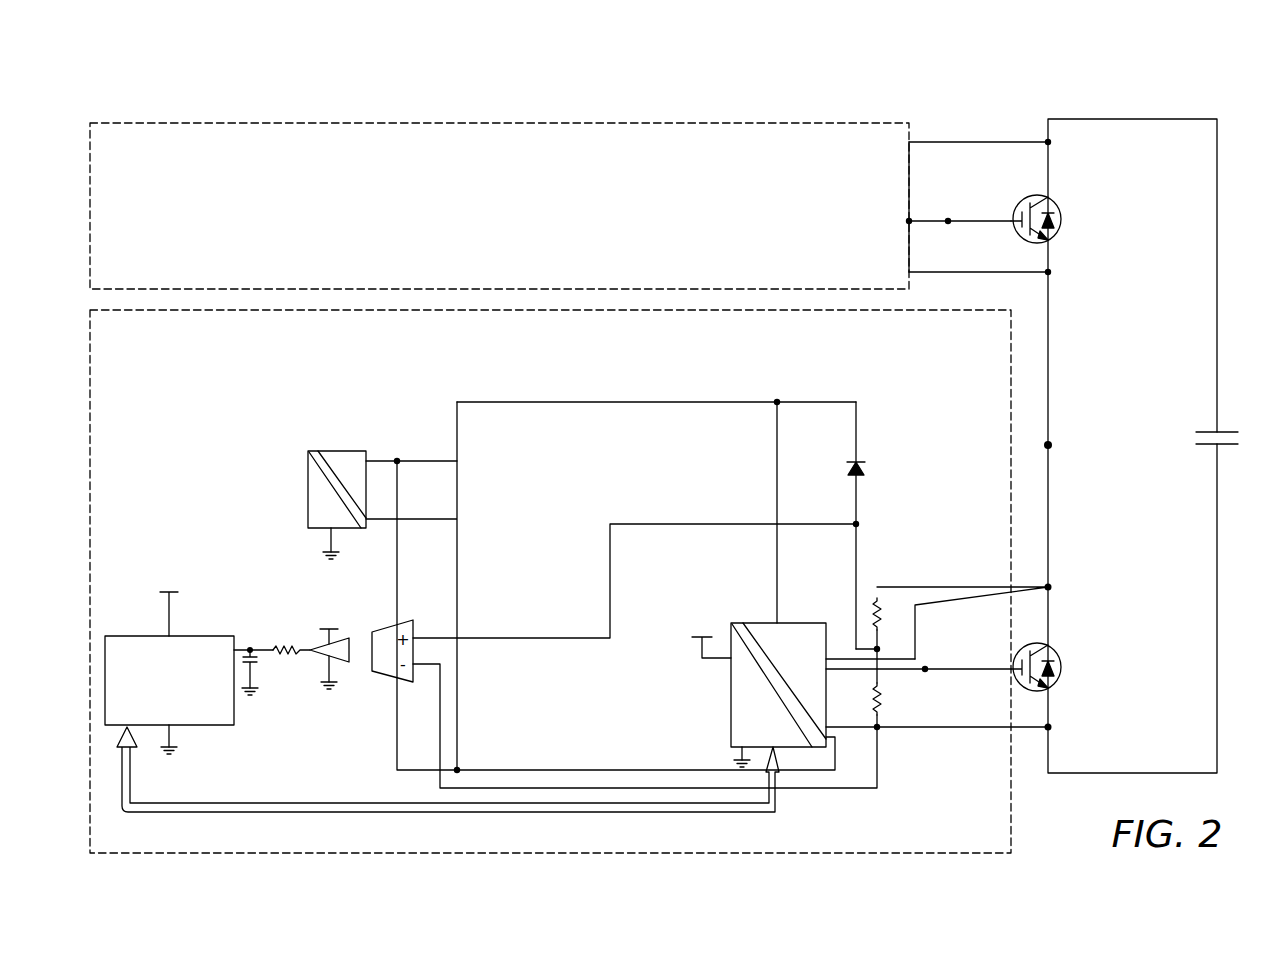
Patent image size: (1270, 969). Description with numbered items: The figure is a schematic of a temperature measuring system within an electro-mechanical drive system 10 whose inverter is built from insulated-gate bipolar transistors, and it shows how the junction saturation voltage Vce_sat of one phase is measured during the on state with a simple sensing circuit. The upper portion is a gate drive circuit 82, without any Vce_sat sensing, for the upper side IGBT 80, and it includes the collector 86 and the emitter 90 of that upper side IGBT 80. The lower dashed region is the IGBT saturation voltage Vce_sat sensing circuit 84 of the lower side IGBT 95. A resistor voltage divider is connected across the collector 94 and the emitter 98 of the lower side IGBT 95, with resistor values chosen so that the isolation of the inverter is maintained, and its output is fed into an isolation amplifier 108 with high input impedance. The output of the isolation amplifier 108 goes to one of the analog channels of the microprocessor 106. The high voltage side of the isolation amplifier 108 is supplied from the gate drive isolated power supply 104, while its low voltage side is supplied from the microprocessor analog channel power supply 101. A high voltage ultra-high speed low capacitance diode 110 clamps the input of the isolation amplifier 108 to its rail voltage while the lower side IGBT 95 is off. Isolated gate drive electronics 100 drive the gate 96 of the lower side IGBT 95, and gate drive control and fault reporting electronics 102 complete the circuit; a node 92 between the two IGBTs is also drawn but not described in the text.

The electro-mechanical drive system 10 is at (838, 100).
The upper side IGBT 80 is at (1188, 104).
The gate drive circuit of upper side IGBT 82 is at (893, 145).
The IGBT saturation voltage Vce_sat sensing circuit 84 is at (990, 833).
The collector 86 is at (1048, 142).
The emitter 90 is at (1048, 272).
The midpoint node 92 is at (1050, 443).
The collector 94 is at (1050, 586).
The lower side IGBT 95 is at (1054, 652).
The gate 96 is at (926, 668).
The emitter 98 is at (1050, 729).
The isolated gate drive electronics 100 is at (797, 645).
The microprocessor analog channel power supply 101 is at (738, 612).
The gate drive control and fault reporting electronics 102 is at (787, 737).
The gate drive isolated power supply 104 is at (355, 465).
The microprocessor 106 is at (198, 708).
The isolation amplifier 108 is at (322, 645).
The high voltage ultra-high speed low capacitance diode 110 is at (851, 468).